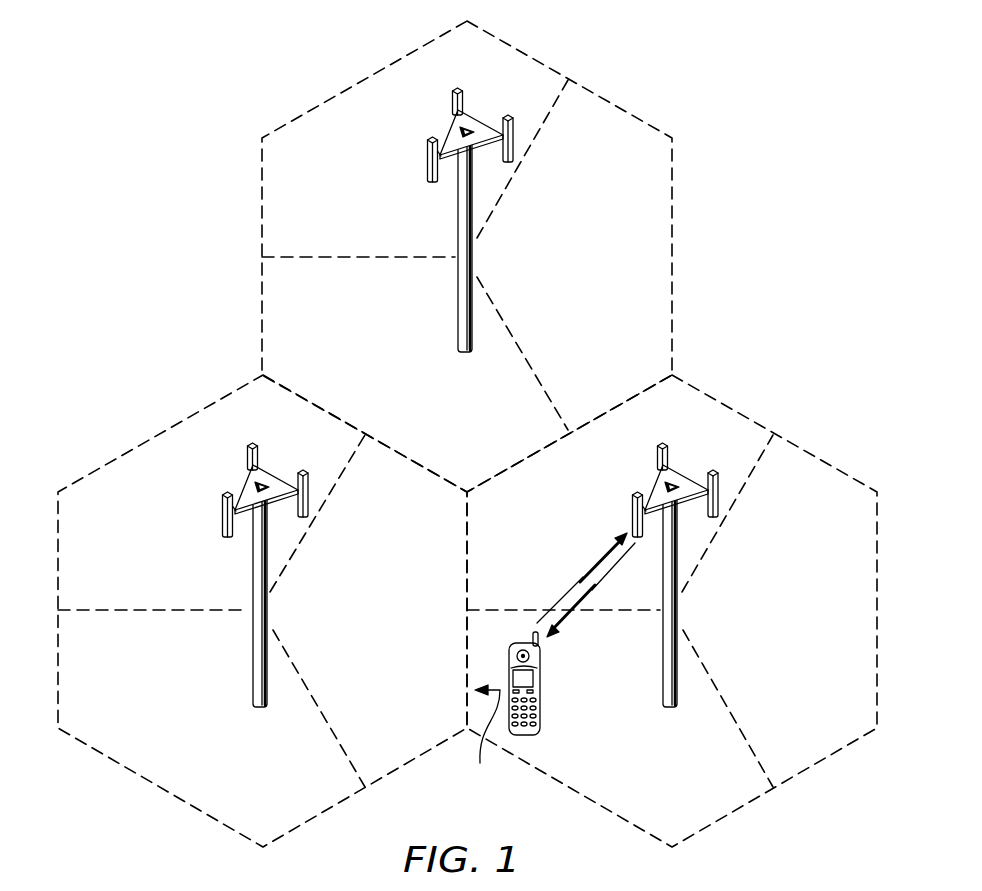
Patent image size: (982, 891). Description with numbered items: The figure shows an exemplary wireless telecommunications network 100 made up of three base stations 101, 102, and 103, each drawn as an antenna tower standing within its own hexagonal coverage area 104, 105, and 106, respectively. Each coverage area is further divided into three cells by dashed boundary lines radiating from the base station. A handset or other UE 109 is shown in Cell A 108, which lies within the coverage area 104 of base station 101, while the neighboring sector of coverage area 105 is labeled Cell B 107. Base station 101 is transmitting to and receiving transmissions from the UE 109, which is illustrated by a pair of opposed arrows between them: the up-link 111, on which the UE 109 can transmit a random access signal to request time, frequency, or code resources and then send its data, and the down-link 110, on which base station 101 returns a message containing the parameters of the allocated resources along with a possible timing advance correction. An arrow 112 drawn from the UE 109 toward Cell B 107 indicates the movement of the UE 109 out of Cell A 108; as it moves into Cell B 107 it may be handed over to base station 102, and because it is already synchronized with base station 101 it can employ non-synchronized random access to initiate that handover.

The wireless telecommunications network 100 is at (751, 88).
The base station 101 is at (677, 617).
The base station 102 is at (253, 578).
The base station 103 is at (458, 223).
The coverage area 104 is at (810, 767).
The coverage area 105 is at (158, 788).
The coverage area 106 is at (672, 255).
The Cell B 107 is at (419, 727).
The Cell A 108 is at (678, 798).
The UE 109 is at (540, 700).
The down-link 110 is at (590, 595).
The up-link 111 is at (598, 555).
The direction of mobile station movement 112 is at (483, 740).